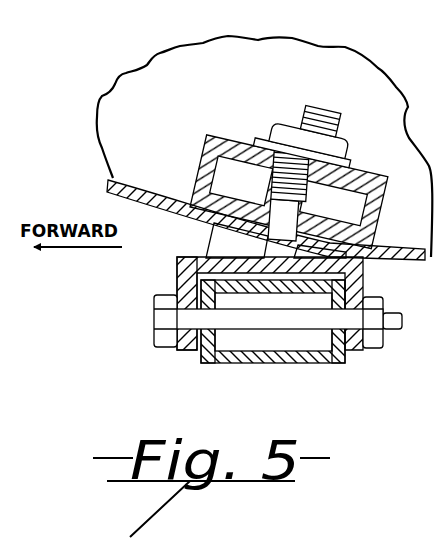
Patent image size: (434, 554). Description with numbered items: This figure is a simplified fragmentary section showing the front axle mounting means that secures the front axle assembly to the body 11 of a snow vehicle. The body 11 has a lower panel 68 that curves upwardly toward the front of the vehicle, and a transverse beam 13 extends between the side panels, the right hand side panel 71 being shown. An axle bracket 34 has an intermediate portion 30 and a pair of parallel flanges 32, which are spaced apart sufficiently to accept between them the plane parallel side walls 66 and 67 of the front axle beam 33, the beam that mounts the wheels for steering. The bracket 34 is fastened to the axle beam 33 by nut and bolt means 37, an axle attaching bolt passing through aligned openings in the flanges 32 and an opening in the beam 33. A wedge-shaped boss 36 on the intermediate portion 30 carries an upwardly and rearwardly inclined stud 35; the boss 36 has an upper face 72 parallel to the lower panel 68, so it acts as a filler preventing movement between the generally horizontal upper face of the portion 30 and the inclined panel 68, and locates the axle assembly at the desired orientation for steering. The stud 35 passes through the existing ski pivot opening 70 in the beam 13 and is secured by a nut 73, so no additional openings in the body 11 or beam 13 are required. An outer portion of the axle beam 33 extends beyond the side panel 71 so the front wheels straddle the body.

The body 11 is at (237, 198).
The transverse beam 13 is at (228, 136).
The intermediate portion 30 is at (205, 257).
The parallel flanges 32 is at (170, 298).
The front axle beam 33 is at (257, 367).
The axle bracket 34 is at (178, 273).
The stud 35 is at (302, 110).
The wedge-shaped boss 36 is at (200, 251).
The nut and bolt means 37 is at (156, 329).
The side wall 66 is at (206, 362).
The side wall 67 is at (344, 357).
The lower panel 68 is at (266, 202).
The opening 70 is at (268, 190).
The right hand side panel 71 is at (363, 105).
The upper face 72 is at (222, 239).
The nut 73 is at (280, 138).